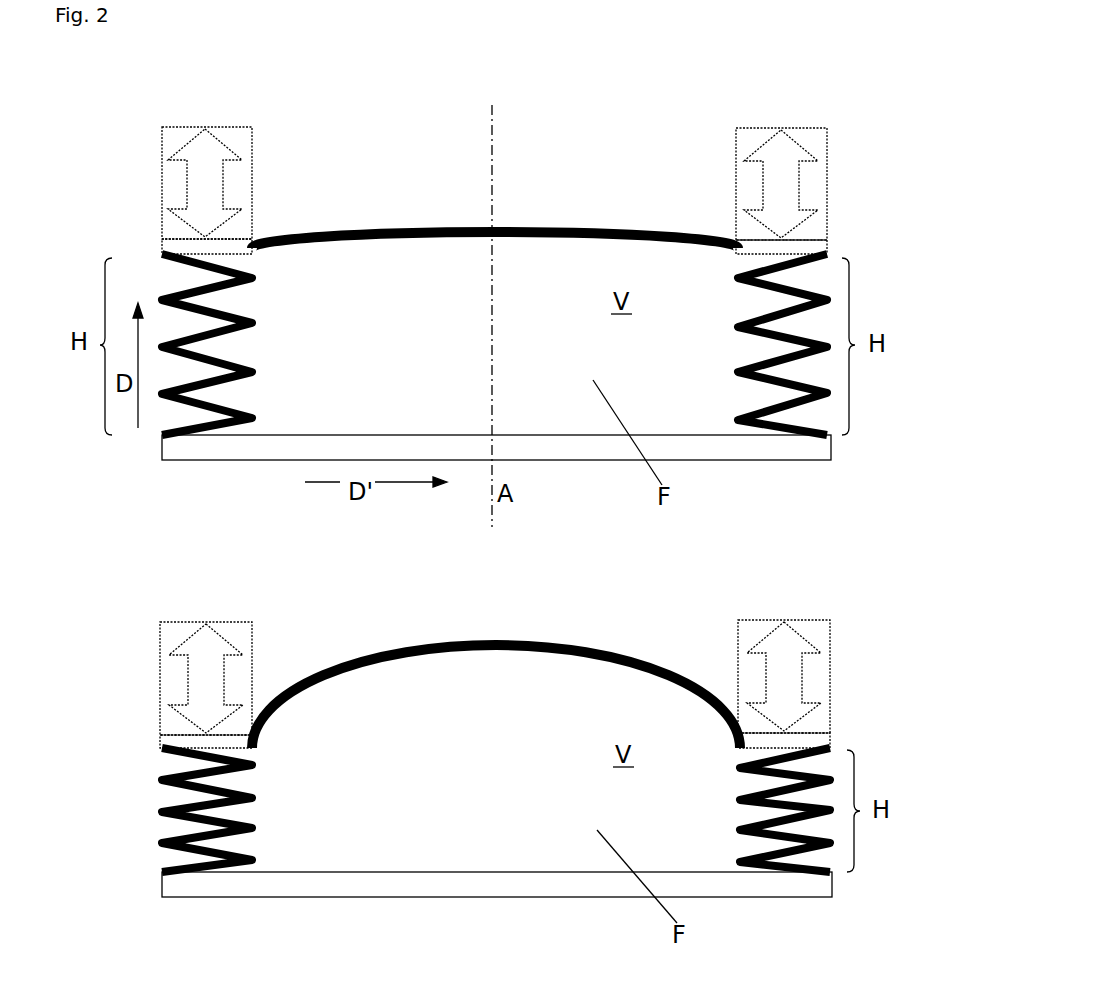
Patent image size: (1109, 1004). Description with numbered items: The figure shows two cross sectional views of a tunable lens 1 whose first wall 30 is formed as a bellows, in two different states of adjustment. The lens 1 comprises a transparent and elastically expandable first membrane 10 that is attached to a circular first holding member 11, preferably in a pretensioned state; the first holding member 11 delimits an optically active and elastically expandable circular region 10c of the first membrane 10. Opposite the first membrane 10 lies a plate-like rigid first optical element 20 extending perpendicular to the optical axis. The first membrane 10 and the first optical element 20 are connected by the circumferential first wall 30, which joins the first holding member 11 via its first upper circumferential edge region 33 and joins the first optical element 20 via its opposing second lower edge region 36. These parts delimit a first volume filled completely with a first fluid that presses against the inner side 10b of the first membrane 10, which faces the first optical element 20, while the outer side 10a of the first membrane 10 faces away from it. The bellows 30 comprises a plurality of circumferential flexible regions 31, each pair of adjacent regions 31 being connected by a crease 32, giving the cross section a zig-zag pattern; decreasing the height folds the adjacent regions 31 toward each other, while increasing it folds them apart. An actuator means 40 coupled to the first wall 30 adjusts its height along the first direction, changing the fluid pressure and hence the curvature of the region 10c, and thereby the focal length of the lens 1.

The tunable lens 1 is at (427, 192).
The first membrane 10 is at (496, 441).
The membrane top surface 10a is at (533, 228).
The inner side of the first membrane 10b is at (558, 240).
The optically active and elastically expandable circular region 10c is at (382, 230).
The first holding member 11 is at (822, 250).
The first optical element 20 is at (558, 448).
The first wall 30 is at (437, 535).
The flexible regions 31 is at (218, 355).
The crease 32 is at (255, 372).
The first upper circumferential edge region 33 is at (160, 250).
The second lower edge region 36 is at (192, 437).
The actuator means 40 is at (238, 140).